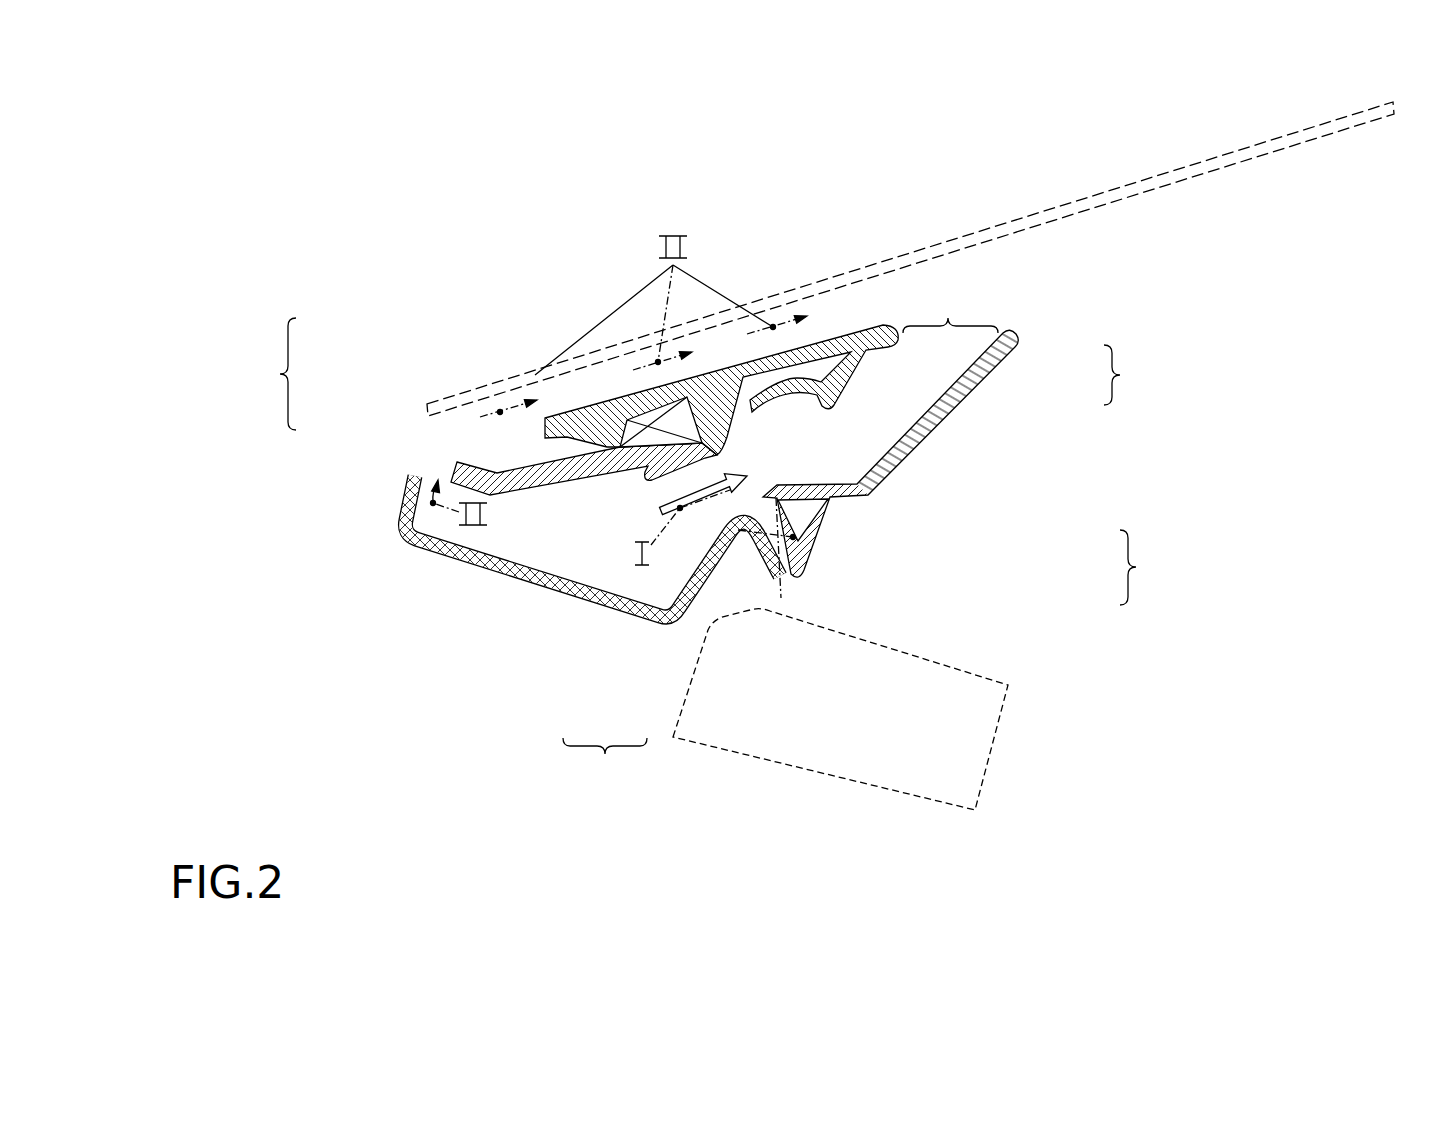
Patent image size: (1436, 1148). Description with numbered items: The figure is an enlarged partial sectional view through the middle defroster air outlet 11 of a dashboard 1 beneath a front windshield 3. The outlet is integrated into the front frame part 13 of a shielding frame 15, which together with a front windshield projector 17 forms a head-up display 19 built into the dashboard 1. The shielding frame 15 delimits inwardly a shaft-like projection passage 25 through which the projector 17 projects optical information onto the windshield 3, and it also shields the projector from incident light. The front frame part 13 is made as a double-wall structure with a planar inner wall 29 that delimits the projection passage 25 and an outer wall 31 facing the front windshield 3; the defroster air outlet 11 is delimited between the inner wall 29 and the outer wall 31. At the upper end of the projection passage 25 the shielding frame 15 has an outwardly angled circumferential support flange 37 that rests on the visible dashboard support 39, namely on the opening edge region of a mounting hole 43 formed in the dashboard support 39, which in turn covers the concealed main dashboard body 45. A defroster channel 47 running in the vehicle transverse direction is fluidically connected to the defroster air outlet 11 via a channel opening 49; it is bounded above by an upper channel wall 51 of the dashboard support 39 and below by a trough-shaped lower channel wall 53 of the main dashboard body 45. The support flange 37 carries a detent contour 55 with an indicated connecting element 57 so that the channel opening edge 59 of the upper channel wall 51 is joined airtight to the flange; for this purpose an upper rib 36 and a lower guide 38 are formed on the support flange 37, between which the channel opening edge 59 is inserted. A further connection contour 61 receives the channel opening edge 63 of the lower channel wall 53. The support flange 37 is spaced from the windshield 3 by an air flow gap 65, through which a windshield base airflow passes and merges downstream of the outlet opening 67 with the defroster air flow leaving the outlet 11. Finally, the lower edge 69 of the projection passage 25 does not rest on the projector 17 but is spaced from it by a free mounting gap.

The dashboard 1 is at (275, 374).
The front windshield 3 is at (1002, 231).
The middle defroster air outlet 11 is at (950, 312).
The front frame part 13 is at (1129, 375).
The shielding frame 15 is at (943, 448).
The front windshield projector 17 is at (958, 705).
The head-up display 19 is at (1145, 567).
The projection passage 25 is at (1170, 493).
The inner wall 29 is at (937, 418).
The outer wall 31 is at (853, 372).
The upper rib 36 is at (603, 437).
The support flange 37 is at (880, 335).
The lower guide 38 is at (652, 471).
The dashboard support 39 is at (453, 467).
The mounting hole 43 is at (674, 444).
The main dashboard body 45 is at (400, 497).
The defroster channel 47 is at (537, 545).
The channel opening 49 is at (605, 768).
The upper channel wall 51 is at (468, 468).
The lower channel wall 53 is at (415, 547).
The detent contour 55 is at (723, 436).
The connecting element 57 is at (807, 570).
The channel opening edge 59 is at (600, 465).
The connection contour 61 is at (830, 487).
The channel opening edge 63 is at (738, 530).
The air flow gap 65 is at (832, 308).
The outlet opening 67 is at (1010, 334).
The lower edge 69 is at (781, 598).